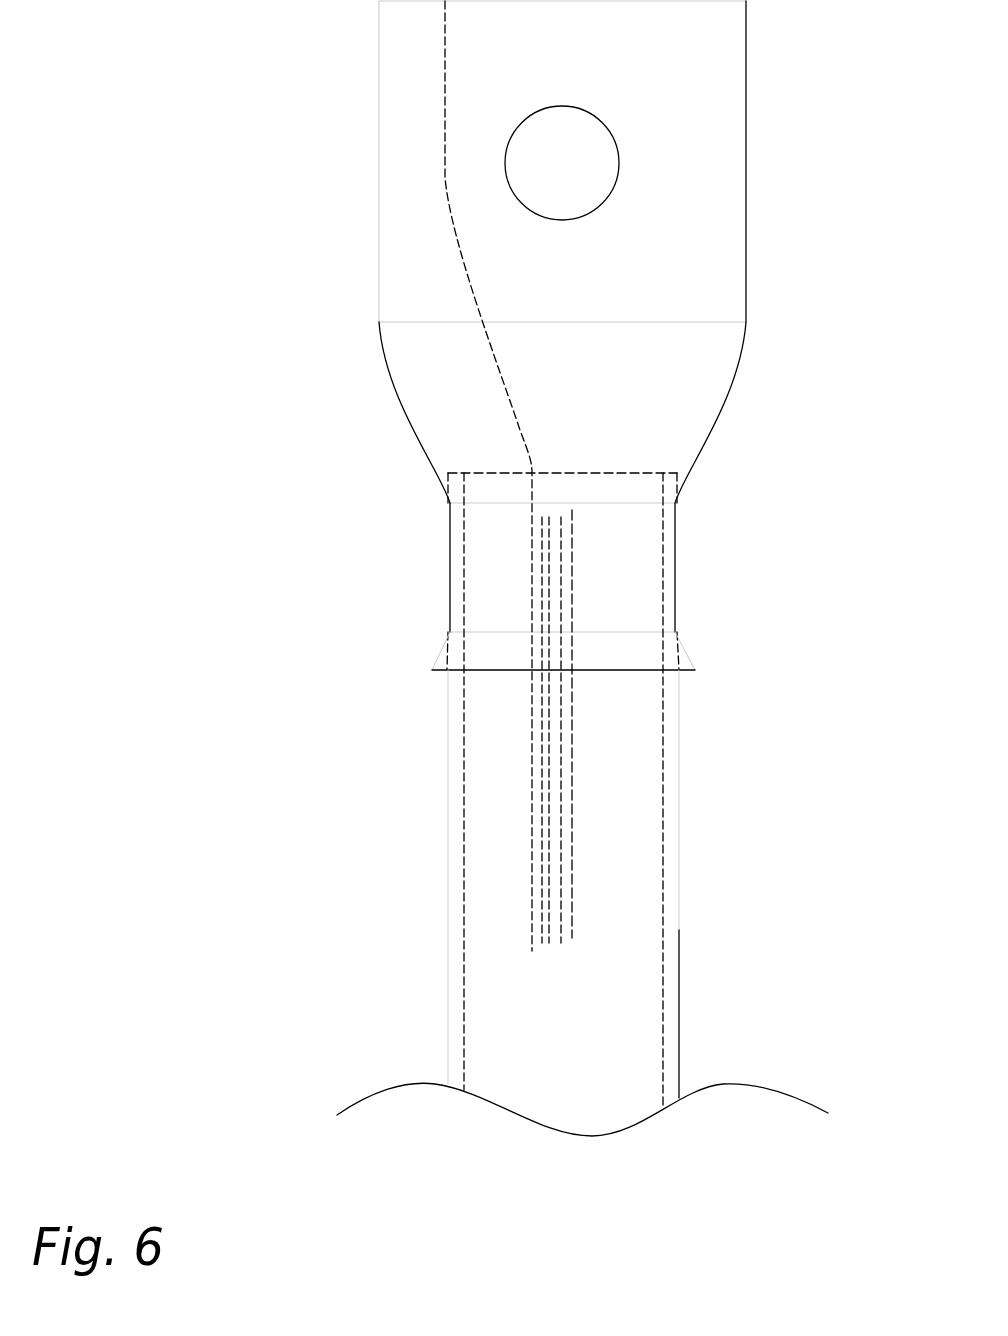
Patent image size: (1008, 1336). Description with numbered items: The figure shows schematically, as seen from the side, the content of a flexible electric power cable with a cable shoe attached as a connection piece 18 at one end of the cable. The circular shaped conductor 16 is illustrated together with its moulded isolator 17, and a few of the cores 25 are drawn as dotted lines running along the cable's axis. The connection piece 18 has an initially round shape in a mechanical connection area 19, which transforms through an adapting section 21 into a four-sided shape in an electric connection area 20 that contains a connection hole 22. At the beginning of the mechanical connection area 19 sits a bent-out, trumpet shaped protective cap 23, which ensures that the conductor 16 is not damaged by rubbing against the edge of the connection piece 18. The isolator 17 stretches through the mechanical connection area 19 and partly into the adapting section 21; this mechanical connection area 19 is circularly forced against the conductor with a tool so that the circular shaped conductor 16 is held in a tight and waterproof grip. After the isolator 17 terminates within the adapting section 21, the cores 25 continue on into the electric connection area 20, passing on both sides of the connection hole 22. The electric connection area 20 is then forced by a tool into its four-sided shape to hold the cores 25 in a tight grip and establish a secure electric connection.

The conductor 16 is at (555, 568).
The moulded isolator 17 is at (675, 893).
The connection piece 18 is at (541, 259).
The mechanical connection area 19 is at (675, 567).
The electric connection area 20 is at (732, 170).
The adapting section 21 is at (722, 388).
The connection hole 22 is at (573, 183).
The protective cap 23 is at (690, 658).
The cores 25 is at (533, 792).